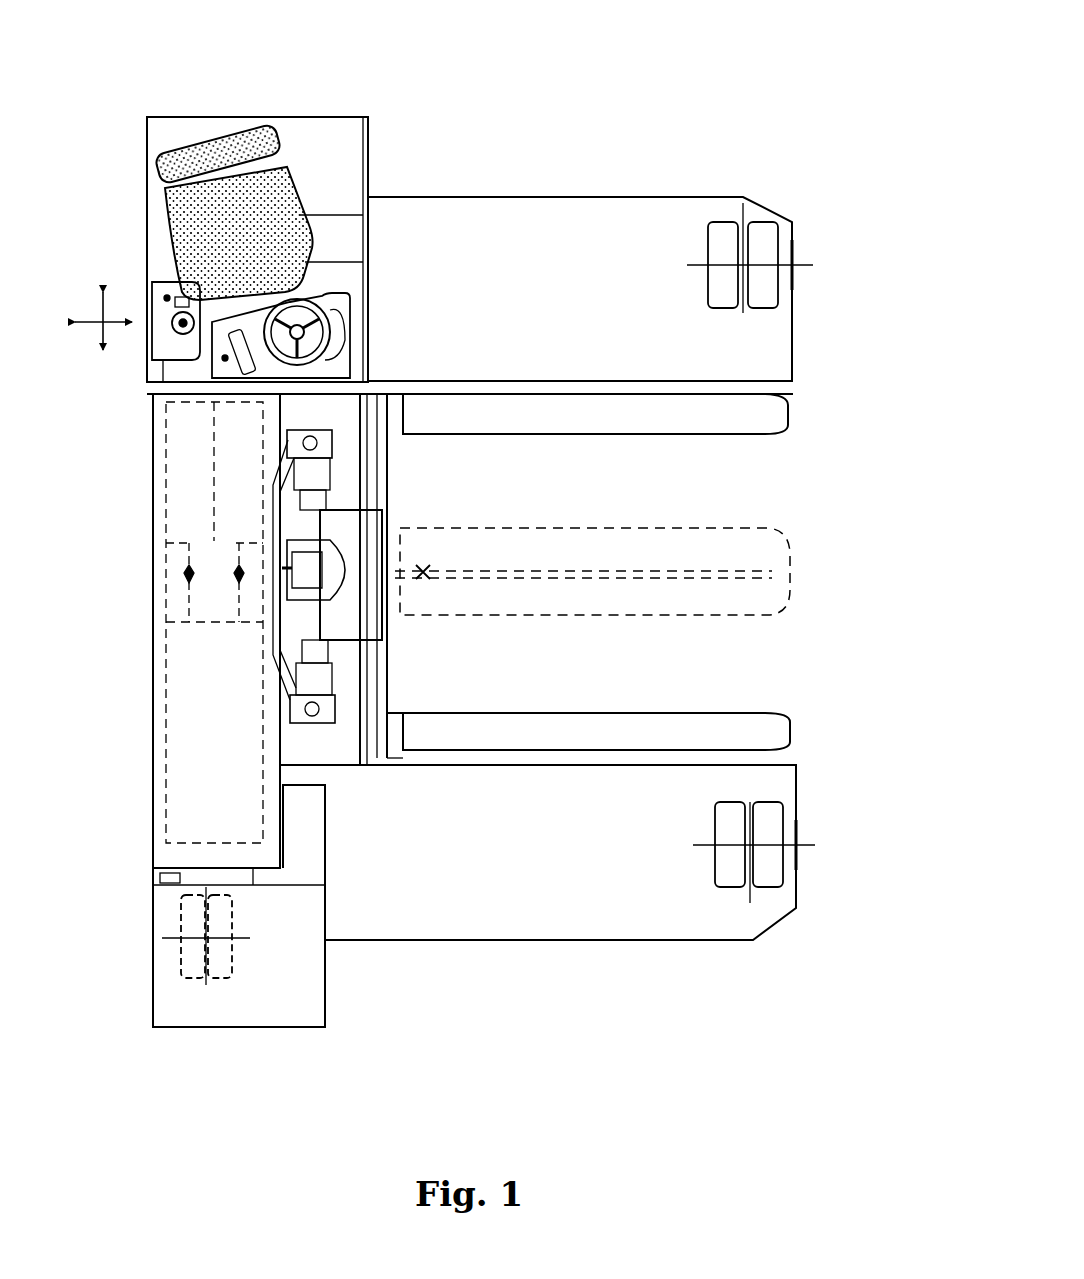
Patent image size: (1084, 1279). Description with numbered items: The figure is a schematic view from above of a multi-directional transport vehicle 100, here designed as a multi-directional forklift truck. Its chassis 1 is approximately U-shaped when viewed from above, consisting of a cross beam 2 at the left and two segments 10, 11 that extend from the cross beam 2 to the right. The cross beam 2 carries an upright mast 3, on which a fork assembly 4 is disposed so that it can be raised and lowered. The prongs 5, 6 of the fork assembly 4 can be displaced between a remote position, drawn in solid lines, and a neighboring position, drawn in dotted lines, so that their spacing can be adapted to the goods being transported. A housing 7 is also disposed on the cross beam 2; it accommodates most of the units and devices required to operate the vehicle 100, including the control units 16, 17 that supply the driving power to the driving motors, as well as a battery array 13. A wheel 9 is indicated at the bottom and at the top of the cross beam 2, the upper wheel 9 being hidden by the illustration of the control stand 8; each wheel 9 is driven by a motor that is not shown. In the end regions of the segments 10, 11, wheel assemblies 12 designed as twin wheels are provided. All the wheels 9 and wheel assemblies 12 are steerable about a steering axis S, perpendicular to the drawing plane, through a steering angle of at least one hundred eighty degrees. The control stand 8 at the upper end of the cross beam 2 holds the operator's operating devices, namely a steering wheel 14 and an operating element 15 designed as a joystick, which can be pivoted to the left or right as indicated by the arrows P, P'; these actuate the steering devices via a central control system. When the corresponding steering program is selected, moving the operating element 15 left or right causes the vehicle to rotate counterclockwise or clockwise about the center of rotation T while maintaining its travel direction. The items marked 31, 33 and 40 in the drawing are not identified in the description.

The multi-directional transport vehicle 100 is at (695, 107).
The chassis 1 is at (398, 172).
The cross beam 2 is at (137, 570).
The mast 3 is at (362, 535).
The fork assembly 4 is at (768, 487).
The prong 5 is at (604, 543).
The prong 6 is at (593, 738).
The housing 7 is at (168, 612).
The control stand 8 is at (235, 108).
The wheel 9 is at (195, 953).
The segment 10 is at (534, 291).
The segment 11 is at (534, 873).
The wheel assembly 12 is at (765, 235).
The battery array 13 is at (230, 766).
The steering wheel 14 is at (336, 320).
The operating element 15 is at (147, 298).
The control unit 16 is at (205, 490).
The control unit 17 is at (254, 490).
The wheel bracket 31 is at (802, 832).
The wheel bracket 33 is at (800, 253).
The drive compartment 40 is at (250, 955).
The steering axis S is at (750, 268).
The center of rotation T is at (426, 578).
The arrow P is at (99, 311).
The arrow P' is at (118, 352).